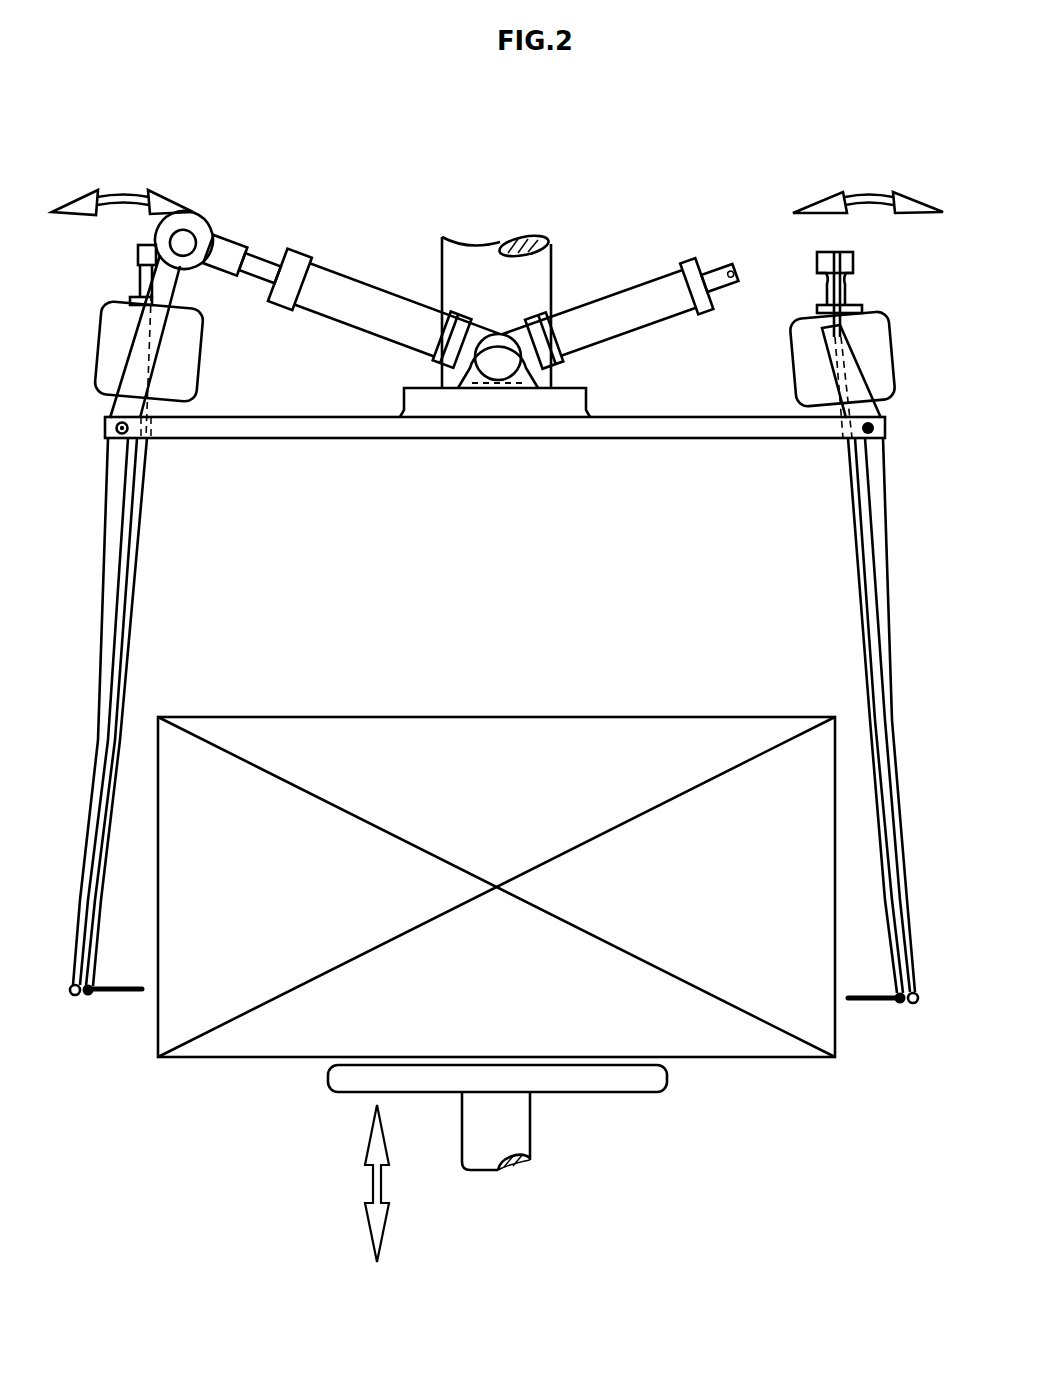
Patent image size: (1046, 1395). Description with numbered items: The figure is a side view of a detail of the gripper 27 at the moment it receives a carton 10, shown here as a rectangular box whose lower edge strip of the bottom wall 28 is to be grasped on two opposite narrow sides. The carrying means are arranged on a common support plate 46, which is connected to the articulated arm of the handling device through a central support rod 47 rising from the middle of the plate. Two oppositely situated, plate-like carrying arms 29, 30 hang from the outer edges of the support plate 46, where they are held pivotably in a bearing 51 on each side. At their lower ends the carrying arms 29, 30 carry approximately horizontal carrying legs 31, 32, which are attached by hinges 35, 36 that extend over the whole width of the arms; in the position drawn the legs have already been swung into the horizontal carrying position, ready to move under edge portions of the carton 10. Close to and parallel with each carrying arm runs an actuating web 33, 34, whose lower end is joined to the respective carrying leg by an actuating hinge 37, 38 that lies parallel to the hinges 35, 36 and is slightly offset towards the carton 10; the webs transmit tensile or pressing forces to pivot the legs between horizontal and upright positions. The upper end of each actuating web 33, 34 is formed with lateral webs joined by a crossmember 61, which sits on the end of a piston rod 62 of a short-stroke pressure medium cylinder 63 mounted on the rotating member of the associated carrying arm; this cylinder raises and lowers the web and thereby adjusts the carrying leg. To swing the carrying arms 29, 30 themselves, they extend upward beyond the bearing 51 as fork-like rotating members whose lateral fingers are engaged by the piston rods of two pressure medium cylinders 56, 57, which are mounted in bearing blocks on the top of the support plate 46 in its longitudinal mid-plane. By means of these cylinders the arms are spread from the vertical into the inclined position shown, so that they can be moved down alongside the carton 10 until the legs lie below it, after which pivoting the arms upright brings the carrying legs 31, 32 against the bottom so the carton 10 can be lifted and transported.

The carton 10 is at (474, 690).
The gripper 27 is at (636, 188).
The bottom wall 28 is at (281, 1060).
The carrying arm 29 is at (115, 535).
The carrying arm 30 is at (880, 602).
The carrying leg 31 is at (118, 997).
The carrying leg 32 is at (866, 1003).
The actuating web 33 is at (132, 628).
The actuating web 34 is at (852, 502).
The hinge 35 is at (77, 997).
The hinge 36 is at (915, 1004).
The actuating hinge 37 is at (97, 981).
The actuating hinge 38 is at (893, 990).
The support plate 46 is at (668, 377).
The support rod 47 is at (483, 268).
The bearing 51 is at (107, 440).
The pressure medium cylinder 56 is at (348, 293).
The pressure medium cylinder 57 is at (637, 298).
The crossmember 61 is at (148, 246).
The piston rod 62 is at (826, 287).
The pressure medium cylinder 63 is at (182, 361).